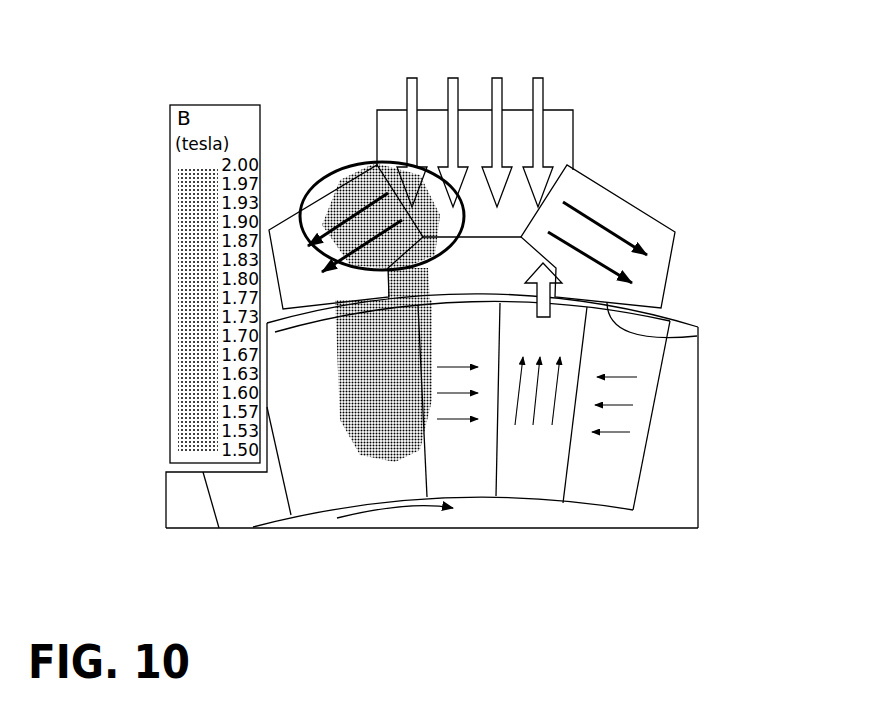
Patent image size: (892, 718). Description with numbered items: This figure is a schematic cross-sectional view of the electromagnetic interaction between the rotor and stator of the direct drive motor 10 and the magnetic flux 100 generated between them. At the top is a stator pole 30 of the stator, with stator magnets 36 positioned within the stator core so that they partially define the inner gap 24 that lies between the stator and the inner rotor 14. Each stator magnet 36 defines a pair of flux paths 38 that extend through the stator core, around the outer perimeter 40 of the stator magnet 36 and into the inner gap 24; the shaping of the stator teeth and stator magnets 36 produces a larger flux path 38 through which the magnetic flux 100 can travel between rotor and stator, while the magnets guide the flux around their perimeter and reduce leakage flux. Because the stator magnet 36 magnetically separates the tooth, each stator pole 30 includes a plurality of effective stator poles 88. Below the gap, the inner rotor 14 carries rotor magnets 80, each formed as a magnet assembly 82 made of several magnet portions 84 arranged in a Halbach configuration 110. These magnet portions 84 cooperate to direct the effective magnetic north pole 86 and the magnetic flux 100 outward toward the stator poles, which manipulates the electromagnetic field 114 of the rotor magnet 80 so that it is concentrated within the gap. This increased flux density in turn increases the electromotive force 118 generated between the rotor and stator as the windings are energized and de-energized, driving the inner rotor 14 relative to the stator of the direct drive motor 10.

The direct drive motor 10 is at (612, 73).
The inner rotor 14 is at (387, 543).
The inner gap 24 is at (656, 310).
The stator pole 30 is at (592, 150).
The stator magnet 36 is at (507, 260).
The flux path 38 is at (289, 208).
The outer perimeter 40 is at (478, 228).
The rotor magnet 80 is at (586, 523).
The magnet assembly 82 is at (662, 444).
The magnet portion 84 is at (527, 472).
The effective magnetic north pole 86 is at (557, 293).
The effective stator pole 88 is at (290, 265).
The magnetic flux 100 is at (360, 197).
The Halbach configuration 110 is at (636, 529).
The electromagnetic field 114 is at (666, 397).
The electromotive force 118 is at (410, 512).